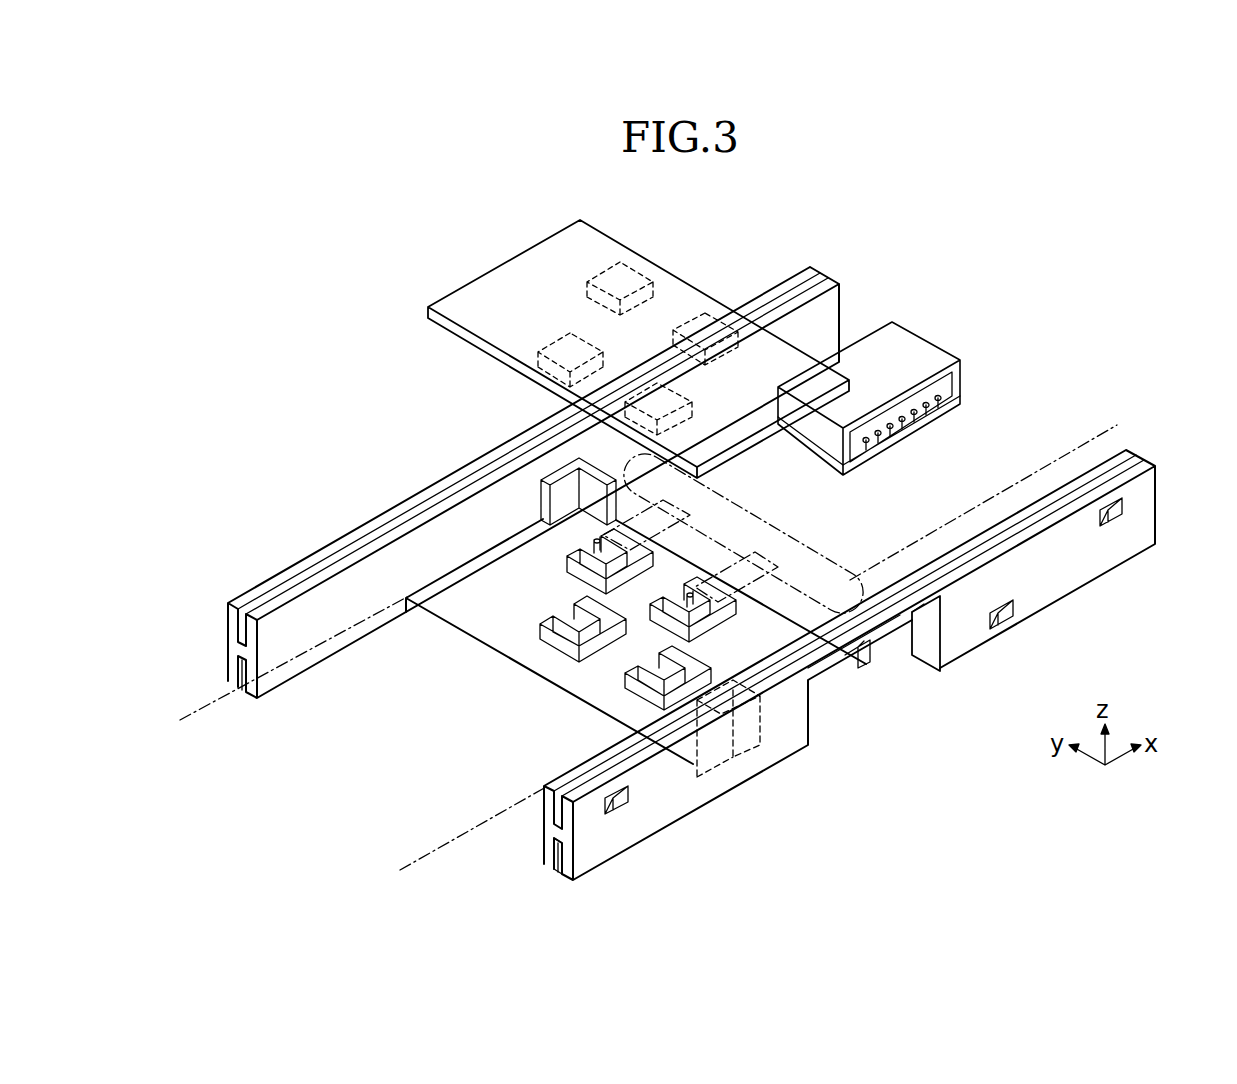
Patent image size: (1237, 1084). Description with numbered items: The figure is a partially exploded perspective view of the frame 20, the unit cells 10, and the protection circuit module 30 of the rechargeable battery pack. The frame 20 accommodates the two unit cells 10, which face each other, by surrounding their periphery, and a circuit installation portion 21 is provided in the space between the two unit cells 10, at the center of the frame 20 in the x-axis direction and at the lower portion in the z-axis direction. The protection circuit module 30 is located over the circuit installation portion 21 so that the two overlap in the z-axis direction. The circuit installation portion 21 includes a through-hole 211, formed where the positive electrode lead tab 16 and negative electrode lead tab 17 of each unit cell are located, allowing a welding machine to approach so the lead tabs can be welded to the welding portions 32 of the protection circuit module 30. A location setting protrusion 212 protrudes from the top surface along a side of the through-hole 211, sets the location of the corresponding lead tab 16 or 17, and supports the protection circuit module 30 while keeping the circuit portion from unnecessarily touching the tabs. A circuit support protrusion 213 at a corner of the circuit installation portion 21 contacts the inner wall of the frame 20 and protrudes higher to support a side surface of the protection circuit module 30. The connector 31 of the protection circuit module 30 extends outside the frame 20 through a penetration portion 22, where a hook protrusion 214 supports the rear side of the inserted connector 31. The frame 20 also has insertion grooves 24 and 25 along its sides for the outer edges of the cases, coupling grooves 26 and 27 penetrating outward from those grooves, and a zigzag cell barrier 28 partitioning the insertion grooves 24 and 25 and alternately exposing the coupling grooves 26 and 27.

The unit cell 10 is at (1082, 443).
The positive electrode lead tab 16 is at (724, 596).
The negative electrode lead tab 17 is at (602, 538).
The frame 20 is at (829, 270).
The circuit installation portion 21 is at (453, 625).
The through-hole 211 is at (562, 653).
The location setting protrusion 212 is at (560, 636).
The circuit support protrusion 213 is at (543, 507).
The hook protrusion 214 is at (882, 648).
The penetration portion 22 is at (925, 650).
The insertion groove 24 is at (556, 793).
The insertion groove 25 is at (553, 872).
The coupling groove 26 is at (1112, 517).
The coupling groove 27 is at (1000, 625).
The cell barrier 28 is at (557, 833).
The protection circuit module 30 is at (692, 285).
The connector 31 is at (943, 378).
The welding portion 32 is at (628, 401).